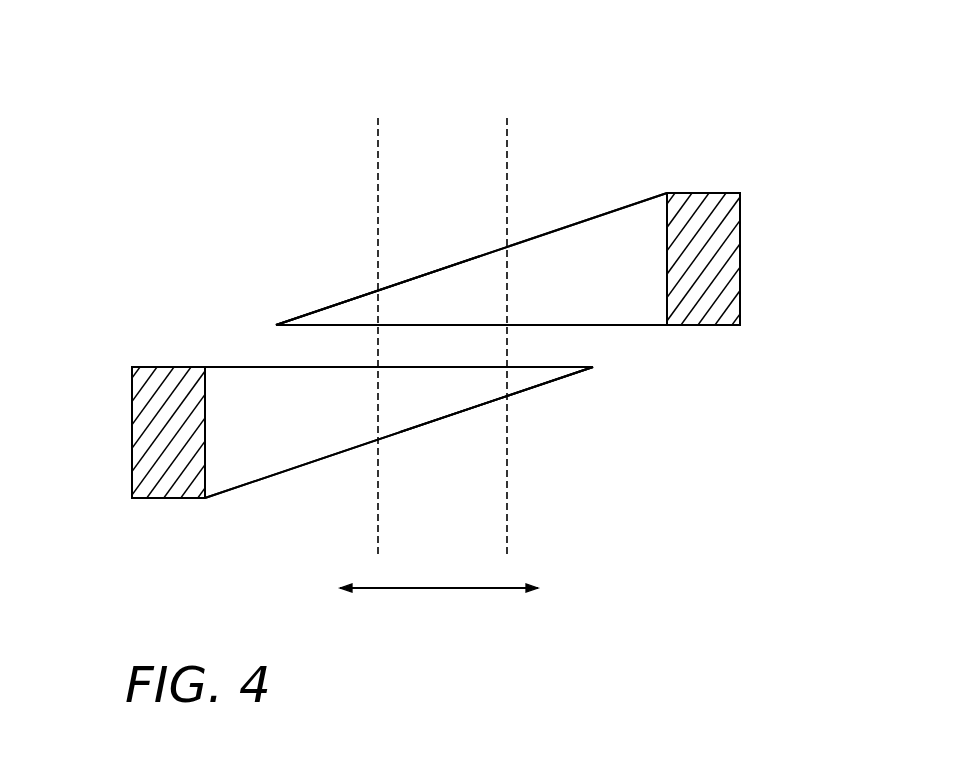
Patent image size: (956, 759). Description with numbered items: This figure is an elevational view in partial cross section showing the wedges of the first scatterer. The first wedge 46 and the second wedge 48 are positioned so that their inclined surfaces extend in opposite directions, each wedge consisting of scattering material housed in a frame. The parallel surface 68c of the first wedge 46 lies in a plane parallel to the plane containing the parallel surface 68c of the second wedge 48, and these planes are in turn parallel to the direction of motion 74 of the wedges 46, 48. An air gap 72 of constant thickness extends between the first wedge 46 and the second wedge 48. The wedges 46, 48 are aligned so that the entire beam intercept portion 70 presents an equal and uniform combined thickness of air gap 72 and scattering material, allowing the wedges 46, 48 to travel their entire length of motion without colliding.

The first wedge 46 is at (355, 468).
The second wedge 48 is at (554, 199).
The parallel surface 68c is at (552, 359).
The beam intercept portion 70 is at (455, 83).
The air gap 72 is at (246, 349).
The direction of motion 74 is at (467, 588).